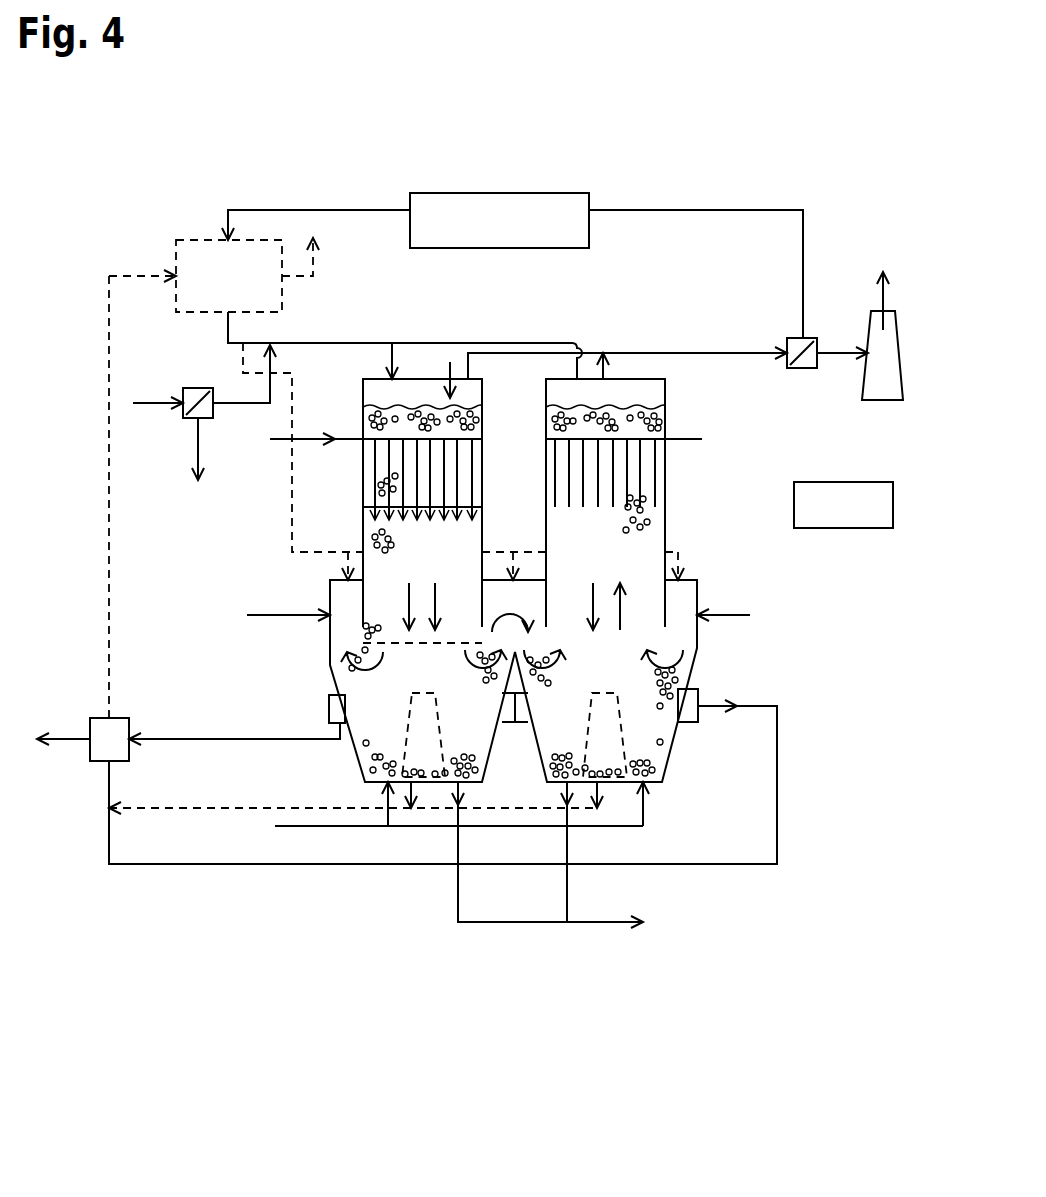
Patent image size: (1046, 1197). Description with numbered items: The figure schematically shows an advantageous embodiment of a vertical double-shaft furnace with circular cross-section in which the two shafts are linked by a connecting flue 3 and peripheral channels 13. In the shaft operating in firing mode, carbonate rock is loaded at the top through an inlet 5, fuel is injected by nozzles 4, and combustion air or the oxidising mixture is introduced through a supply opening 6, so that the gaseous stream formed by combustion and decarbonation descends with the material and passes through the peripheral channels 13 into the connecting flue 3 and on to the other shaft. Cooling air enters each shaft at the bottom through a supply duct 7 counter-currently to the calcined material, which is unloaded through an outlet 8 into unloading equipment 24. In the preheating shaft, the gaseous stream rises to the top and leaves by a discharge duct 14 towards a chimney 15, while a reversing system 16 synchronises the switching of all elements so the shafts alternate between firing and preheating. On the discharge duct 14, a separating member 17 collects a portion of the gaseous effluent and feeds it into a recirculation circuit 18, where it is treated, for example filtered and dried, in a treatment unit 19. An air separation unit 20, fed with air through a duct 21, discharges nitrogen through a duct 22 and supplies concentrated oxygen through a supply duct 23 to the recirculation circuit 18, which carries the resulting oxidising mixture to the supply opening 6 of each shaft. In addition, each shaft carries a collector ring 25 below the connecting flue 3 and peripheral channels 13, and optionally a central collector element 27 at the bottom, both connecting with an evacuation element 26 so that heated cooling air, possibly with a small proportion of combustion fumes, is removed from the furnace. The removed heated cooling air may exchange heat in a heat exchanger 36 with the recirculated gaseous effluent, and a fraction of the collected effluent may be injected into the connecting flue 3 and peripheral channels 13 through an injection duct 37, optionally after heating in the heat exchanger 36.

The connecting flue 3 is at (535, 580).
The nozzles 4 is at (388, 459).
The inlet 5 is at (447, 362).
The supply opening 6 is at (388, 378).
The supply duct 7 is at (433, 830).
The outlet 8 is at (567, 790).
The peripheral channels 13 is at (345, 578).
The discharge duct 14 is at (647, 353).
The chimney 15 is at (868, 340).
The reversing system 16 is at (827, 520).
The separating member 17 is at (795, 338).
The recirculation circuit 18 is at (300, 210).
The treatment unit 19 is at (484, 235).
The air separation unit 20 is at (182, 420).
The duct 21 is at (150, 402).
The duct 22 is at (202, 447).
The supply duct 23 is at (270, 392).
The unloading equipment 24 is at (494, 925).
The collector ring 25 is at (329, 710).
The evacuation element 26 is at (88, 757).
The central collector element 27 is at (405, 740).
The heat exchanger 36 is at (212, 293).
The injection duct 37 is at (292, 460).